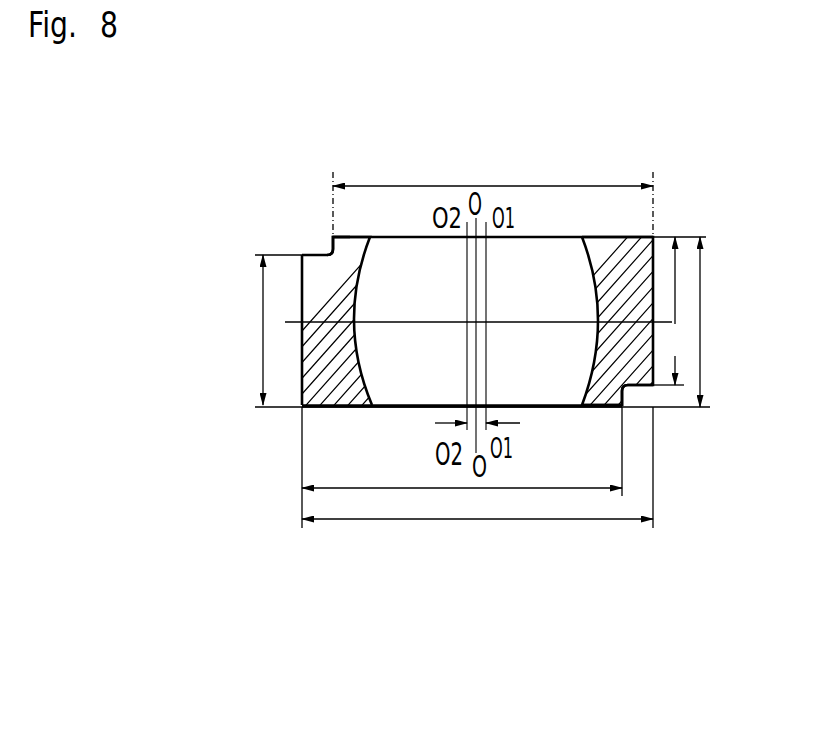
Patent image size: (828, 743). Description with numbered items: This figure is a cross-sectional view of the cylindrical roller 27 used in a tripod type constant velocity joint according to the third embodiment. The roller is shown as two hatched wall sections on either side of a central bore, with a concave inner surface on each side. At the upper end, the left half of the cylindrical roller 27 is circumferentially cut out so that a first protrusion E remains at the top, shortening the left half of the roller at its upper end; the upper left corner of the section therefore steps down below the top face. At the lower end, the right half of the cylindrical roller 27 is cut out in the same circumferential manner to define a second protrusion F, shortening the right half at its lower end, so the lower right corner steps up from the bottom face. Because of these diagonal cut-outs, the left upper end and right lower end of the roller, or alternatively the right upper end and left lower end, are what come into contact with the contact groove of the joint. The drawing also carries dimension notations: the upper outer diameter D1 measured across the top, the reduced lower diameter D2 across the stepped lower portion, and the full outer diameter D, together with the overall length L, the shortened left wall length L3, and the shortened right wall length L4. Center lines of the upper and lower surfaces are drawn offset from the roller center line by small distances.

The cylindrical roller 27 is at (330, 387).
The first protrusion E is at (333, 237).
The second protrusion F is at (605, 404).
The top outer diameter D1 is at (493, 170).
The bottom step diameter D2 is at (462, 504).
The outer diameter D is at (477, 538).
The overall height L is at (707, 322).
The left wall height L3 is at (245, 330).
The right wall height L4 is at (672, 311).